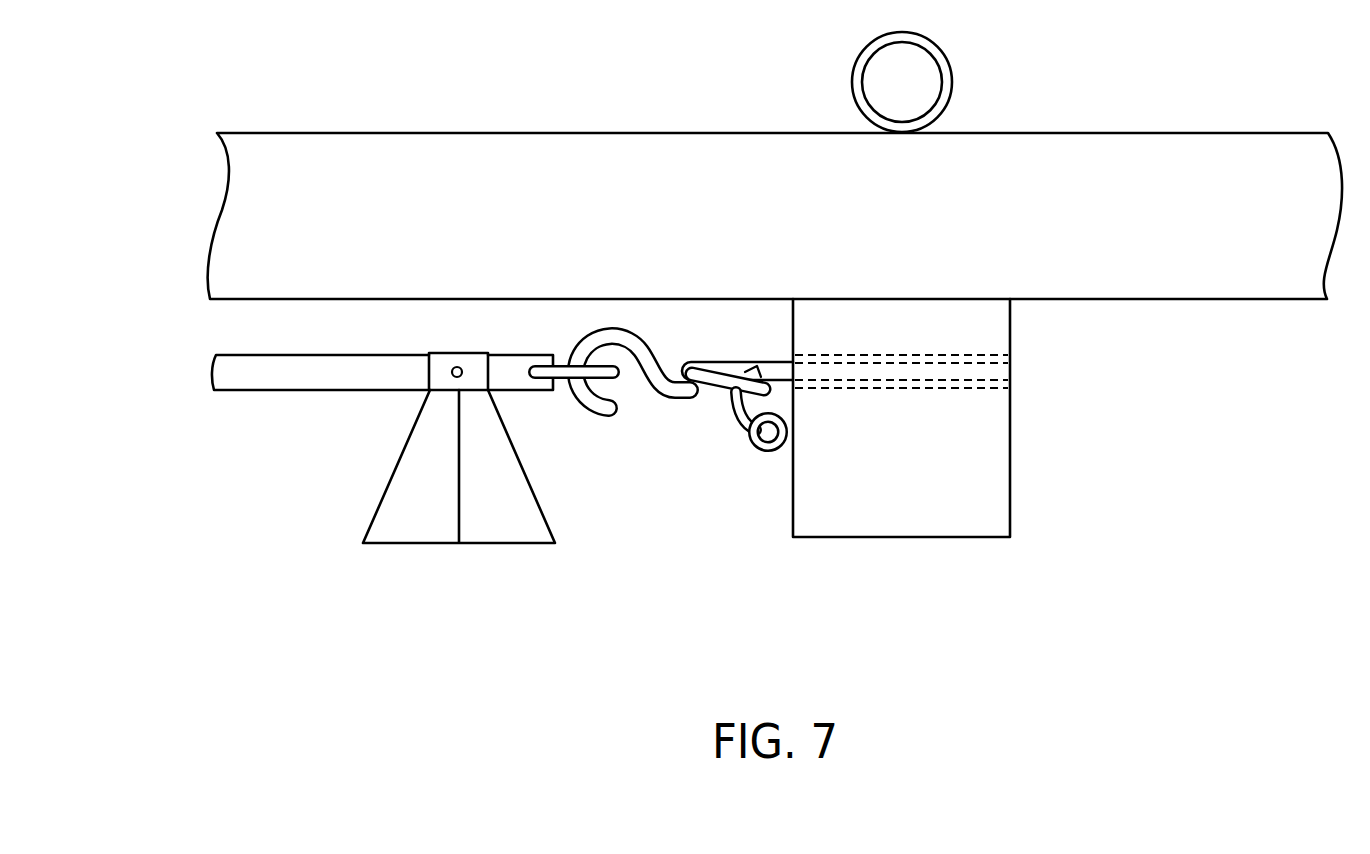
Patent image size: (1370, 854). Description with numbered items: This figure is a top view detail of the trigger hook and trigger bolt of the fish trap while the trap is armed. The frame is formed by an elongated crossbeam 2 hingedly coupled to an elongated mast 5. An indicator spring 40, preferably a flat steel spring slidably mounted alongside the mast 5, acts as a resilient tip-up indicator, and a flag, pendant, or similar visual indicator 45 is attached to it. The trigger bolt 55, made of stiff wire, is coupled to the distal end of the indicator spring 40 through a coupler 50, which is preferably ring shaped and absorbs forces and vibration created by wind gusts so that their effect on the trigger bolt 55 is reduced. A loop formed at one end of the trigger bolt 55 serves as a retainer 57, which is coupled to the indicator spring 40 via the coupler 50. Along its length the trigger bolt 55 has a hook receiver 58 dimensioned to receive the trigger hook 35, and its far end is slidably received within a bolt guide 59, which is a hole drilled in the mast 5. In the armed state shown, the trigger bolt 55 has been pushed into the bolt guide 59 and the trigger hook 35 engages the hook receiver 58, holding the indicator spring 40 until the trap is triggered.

The crossbeam 2 is at (1113, 133).
The mast 5 is at (923, 538).
The trigger hook 35 is at (738, 422).
The indicator spring 40 is at (287, 391).
The visual indicator 45 is at (407, 545).
The coupler 50 is at (562, 365).
The trigger bolt 55 is at (672, 372).
The retainer 57 is at (612, 410).
The hook receiver 58 is at (703, 377).
The bolt guide 59 is at (983, 390).